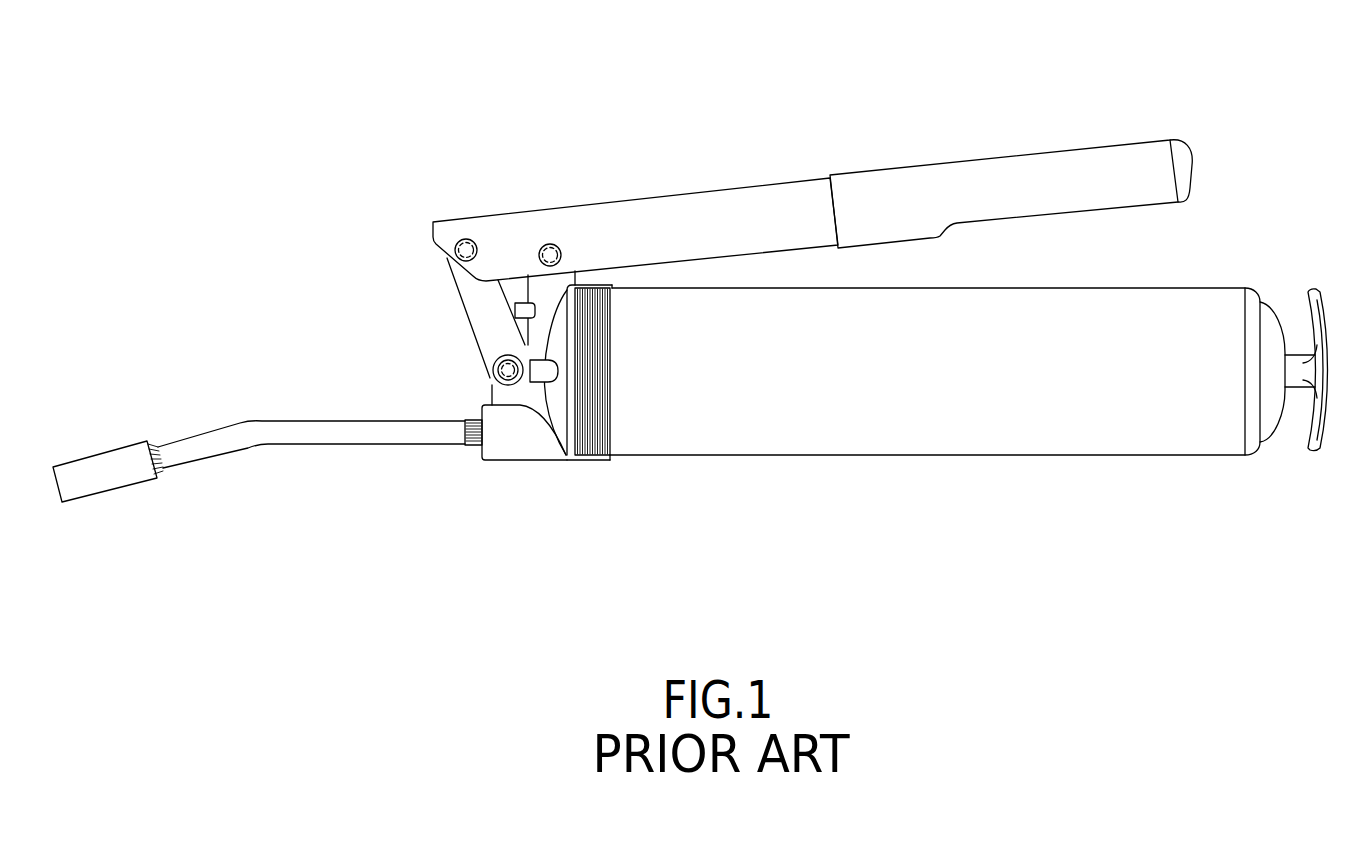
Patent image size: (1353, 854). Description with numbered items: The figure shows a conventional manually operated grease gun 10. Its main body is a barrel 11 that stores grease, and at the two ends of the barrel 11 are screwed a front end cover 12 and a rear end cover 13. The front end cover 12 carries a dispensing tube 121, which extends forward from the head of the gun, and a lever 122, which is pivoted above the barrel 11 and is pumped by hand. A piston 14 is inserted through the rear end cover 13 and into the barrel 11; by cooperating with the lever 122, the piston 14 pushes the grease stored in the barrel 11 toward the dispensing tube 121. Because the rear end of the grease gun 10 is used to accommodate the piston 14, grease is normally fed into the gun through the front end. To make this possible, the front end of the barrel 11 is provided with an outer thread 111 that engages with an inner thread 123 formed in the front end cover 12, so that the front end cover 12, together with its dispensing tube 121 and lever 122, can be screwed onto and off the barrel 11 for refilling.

The grease gun 10 is at (701, 327).
The barrel 11 is at (967, 442).
The outer thread 111 is at (612, 400).
The front end cover 12 is at (580, 460).
The dispensing tube 121 is at (215, 435).
The lever 122 is at (1125, 155).
The inner thread 123 is at (595, 457).
The rear end cover 13 is at (1268, 410).
The piston 14 is at (1322, 337).